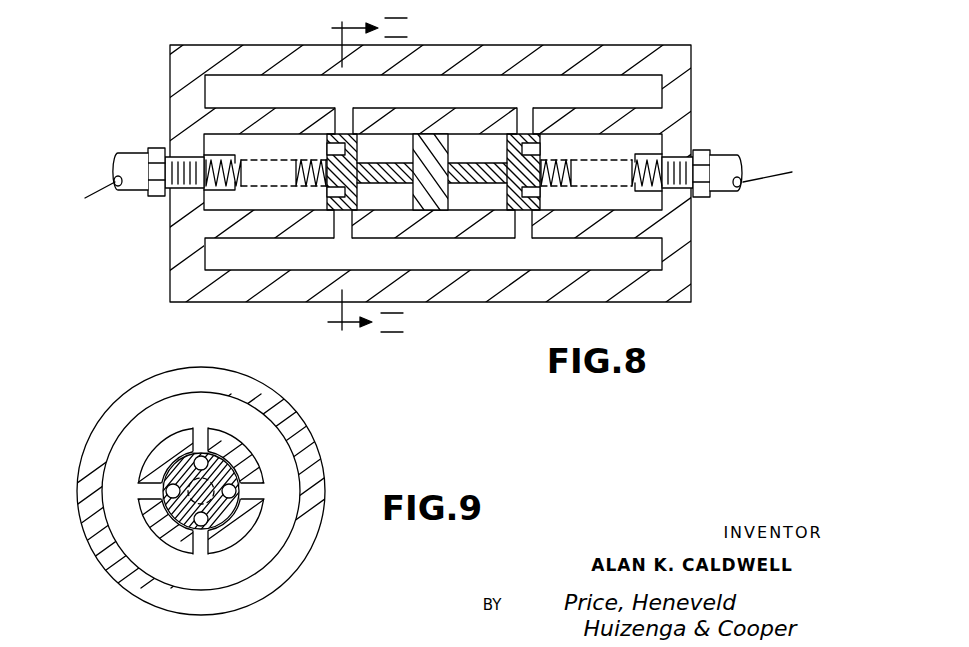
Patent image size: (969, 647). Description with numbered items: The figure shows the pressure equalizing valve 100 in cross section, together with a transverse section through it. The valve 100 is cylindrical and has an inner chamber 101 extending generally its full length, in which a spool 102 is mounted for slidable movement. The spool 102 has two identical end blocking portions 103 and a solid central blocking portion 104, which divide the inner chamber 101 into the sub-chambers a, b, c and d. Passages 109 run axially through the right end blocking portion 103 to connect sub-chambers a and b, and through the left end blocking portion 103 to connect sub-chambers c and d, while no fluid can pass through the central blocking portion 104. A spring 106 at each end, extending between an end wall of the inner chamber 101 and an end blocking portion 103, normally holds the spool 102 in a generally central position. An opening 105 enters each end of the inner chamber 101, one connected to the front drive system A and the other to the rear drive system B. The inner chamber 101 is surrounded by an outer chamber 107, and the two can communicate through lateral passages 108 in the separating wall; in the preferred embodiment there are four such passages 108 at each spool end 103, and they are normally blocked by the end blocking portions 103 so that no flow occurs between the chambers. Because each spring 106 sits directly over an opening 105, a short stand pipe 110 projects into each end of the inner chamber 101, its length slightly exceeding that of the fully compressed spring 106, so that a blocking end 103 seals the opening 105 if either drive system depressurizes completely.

In FIG. 8, the pressure equalizing valve 100 is at (636, 42).
In FIG. 8, the inner chamber 101 is at (248, 142).
In FIG. 8, the spool 102 is at (429, 210).
In FIG. 9, the spool 102 is at (222, 463).
In FIG. 8, the end blocking portion 103 is at (352, 205).
In FIG. 8, the central blocking portion 104 is at (440, 145).
In FIG. 8, the opening 105 is at (131, 160).
In FIG. 8, the spring 106 is at (305, 184).
In FIG. 8, the outer chamber 107 is at (452, 104).
In FIG. 9, the outer chamber 107 is at (123, 520).
In FIG. 8, the passage 108 is at (343, 122).
In FIG. 9, the passage 108 is at (202, 435).
In FIG. 8, the passage 109 is at (327, 142).
In FIG. 8, the stand pipe 110 is at (213, 155).